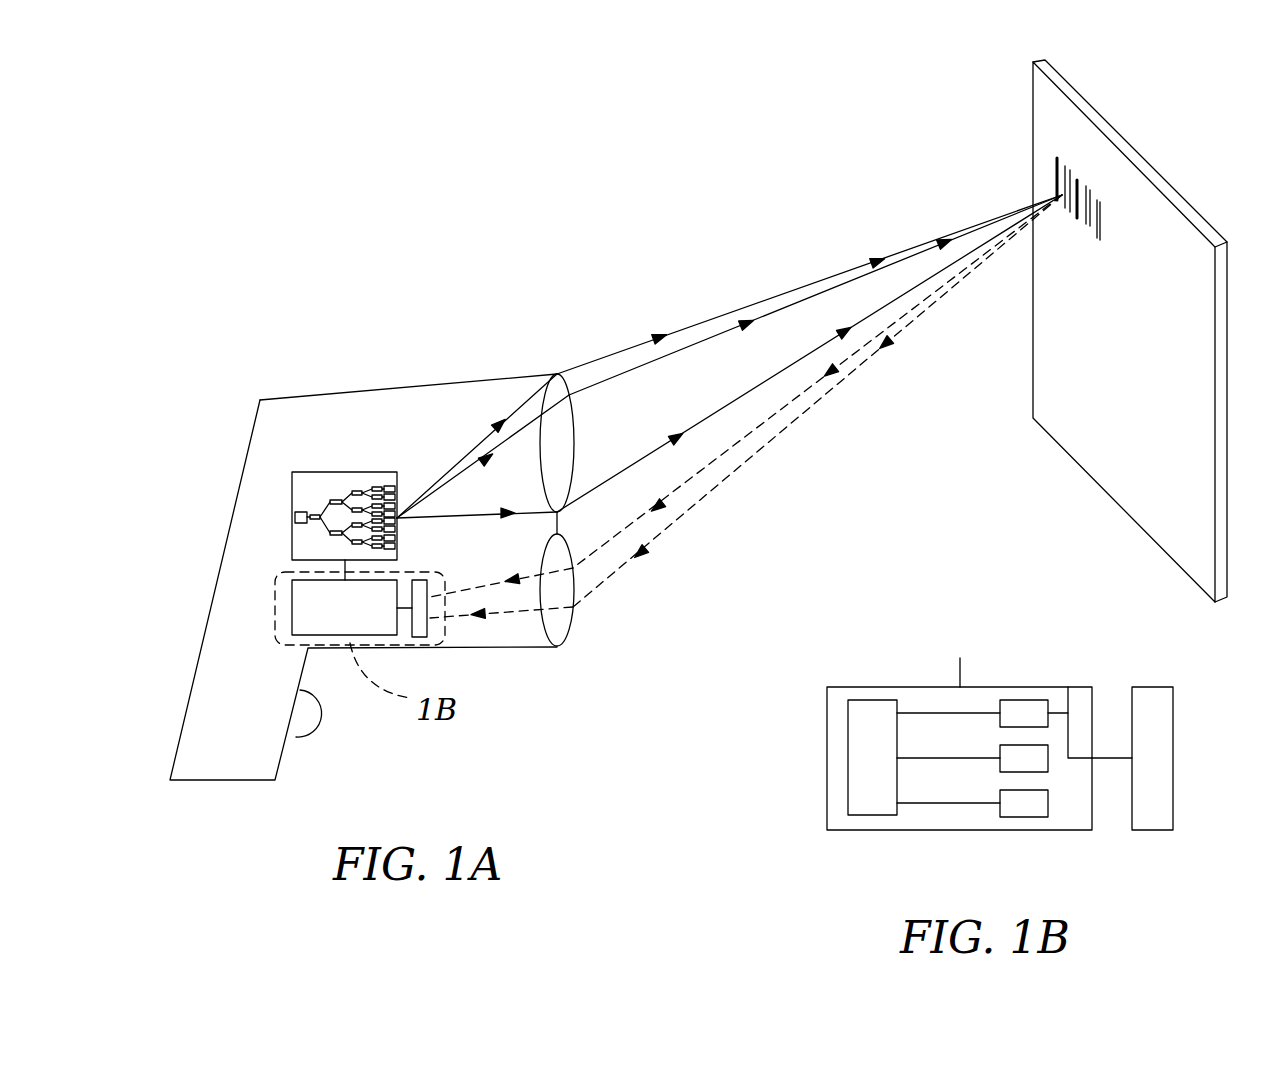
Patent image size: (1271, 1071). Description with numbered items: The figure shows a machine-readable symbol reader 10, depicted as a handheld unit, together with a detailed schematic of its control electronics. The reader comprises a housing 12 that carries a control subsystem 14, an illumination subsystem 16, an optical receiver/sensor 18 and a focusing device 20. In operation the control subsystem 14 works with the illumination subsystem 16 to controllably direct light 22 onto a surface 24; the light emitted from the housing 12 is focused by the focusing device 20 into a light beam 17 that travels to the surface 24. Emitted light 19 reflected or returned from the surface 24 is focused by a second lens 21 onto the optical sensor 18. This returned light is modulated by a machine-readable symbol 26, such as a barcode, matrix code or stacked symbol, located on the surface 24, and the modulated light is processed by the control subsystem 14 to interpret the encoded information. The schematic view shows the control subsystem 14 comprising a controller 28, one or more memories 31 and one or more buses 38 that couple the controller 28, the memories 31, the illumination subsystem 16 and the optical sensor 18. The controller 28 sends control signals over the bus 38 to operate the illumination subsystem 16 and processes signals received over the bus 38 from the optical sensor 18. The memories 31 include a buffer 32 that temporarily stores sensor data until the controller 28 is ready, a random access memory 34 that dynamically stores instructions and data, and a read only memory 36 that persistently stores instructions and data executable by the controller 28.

In FIG. 1A, the machine-readable symbol reader 10 is at (272, 240).
In FIG. 1A, the housing 12 is at (392, 388).
In FIG. 1A, the control subsystem 14 is at (290, 612).
In FIG. 1B, the control subsystem 14 is at (825, 758).
In FIG. 1A, the illumination subsystem 16 is at (345, 472).
In FIG. 1A, the light beam 17 is at (818, 282).
In FIG. 1A, the optical receiver/sensor 18 is at (430, 630).
In FIG. 1B, the optical receiver/sensor 18 is at (1173, 773).
In FIG. 1A, the reflected emitted light 19 is at (753, 455).
In FIG. 1A, the focusing device 20 is at (570, 385).
In FIG. 1A, the second lens 21 is at (568, 636).
In FIG. 1A, the light 22 is at (470, 447).
In FIG. 1A, the surface 24 is at (1120, 508).
In FIG. 1A, the machine-readable symbol 26 is at (1100, 220).
In FIG. 1B, the controller 28 is at (873, 815).
In FIG. 1B, the memories 31 is at (1045, 680).
In FIG. 1B, the buffer 32 is at (1027, 700).
In FIG. 1B, the random access memory 34 is at (1050, 760).
In FIG. 1B, the read only memory 36 is at (1023, 817).
In FIG. 1B, the bus 38 is at (1068, 687).